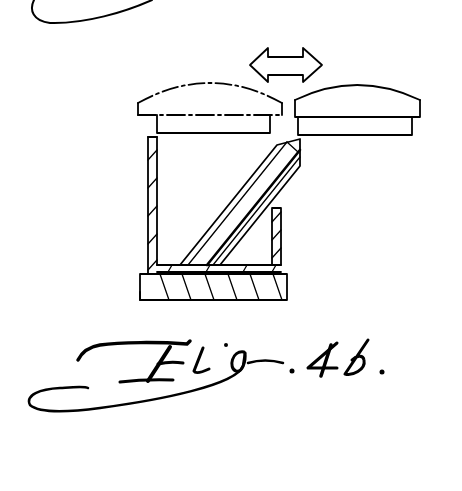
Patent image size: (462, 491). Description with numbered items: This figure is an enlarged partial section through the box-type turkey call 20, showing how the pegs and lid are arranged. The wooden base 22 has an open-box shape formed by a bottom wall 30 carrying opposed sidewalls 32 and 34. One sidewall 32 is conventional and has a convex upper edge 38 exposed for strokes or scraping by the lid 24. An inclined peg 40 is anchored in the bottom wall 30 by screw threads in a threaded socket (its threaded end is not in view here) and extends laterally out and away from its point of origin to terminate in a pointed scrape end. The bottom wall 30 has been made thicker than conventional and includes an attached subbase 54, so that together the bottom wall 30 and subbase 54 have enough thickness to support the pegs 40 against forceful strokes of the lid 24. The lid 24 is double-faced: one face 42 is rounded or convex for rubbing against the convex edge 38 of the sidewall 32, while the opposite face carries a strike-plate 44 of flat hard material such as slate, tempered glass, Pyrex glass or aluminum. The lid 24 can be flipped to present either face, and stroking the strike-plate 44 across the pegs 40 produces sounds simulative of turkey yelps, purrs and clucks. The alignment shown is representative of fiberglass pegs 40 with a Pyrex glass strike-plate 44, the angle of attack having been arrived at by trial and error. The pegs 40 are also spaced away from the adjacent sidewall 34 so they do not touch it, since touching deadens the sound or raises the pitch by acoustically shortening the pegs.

The box-type turkey call 20 is at (230, 56).
The base 22 is at (288, 288).
The actuator top or lid 24 is at (249, 103).
The bottom wall 30 is at (150, 267).
The sidewall 32 is at (150, 201).
The sidewall 34 is at (280, 240).
The upper curved or convex edge 38 is at (152, 137).
The inclined reeds or pegs 40 is at (250, 182).
The side or face of the lid 42 is at (364, 85).
The strike-plate 44 is at (366, 128).
The subbase 54 is at (140, 298).